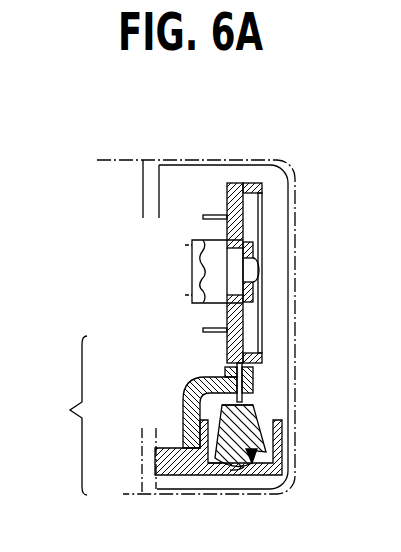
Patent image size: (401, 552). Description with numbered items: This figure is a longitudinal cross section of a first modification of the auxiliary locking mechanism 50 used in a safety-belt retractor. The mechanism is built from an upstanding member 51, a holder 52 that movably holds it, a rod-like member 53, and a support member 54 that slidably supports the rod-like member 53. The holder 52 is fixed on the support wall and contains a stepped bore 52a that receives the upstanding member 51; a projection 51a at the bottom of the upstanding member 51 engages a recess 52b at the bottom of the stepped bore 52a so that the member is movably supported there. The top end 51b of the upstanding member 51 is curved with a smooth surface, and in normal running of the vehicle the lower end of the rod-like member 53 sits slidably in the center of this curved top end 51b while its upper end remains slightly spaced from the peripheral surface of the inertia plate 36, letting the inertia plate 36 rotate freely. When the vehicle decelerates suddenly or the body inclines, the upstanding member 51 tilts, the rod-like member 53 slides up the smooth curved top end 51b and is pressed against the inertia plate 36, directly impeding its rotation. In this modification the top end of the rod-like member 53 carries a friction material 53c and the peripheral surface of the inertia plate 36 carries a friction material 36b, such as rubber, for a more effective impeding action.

The inertia plate 36 is at (253, 343).
The friction material of the inertia plate 36b is at (253, 190).
The auxiliary locking mechanism 50 is at (64, 421).
The upstanding member 51 is at (257, 432).
The projection 51a is at (238, 468).
The top end of the upstanding member 51b is at (250, 400).
The holder 52 is at (276, 453).
The stepped bore 52a is at (211, 475).
The recess 52b is at (252, 465).
The rod-like member 53 is at (222, 370).
The friction material of the rod-like member 53c is at (223, 367).
The support member 54 is at (185, 412).